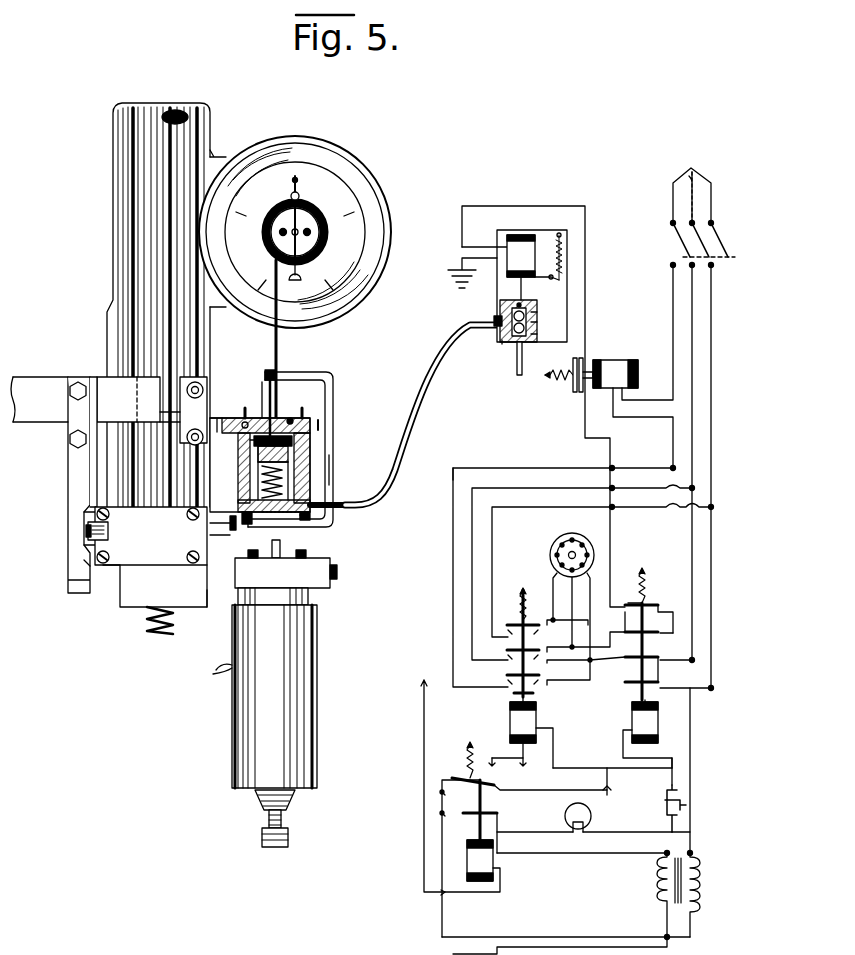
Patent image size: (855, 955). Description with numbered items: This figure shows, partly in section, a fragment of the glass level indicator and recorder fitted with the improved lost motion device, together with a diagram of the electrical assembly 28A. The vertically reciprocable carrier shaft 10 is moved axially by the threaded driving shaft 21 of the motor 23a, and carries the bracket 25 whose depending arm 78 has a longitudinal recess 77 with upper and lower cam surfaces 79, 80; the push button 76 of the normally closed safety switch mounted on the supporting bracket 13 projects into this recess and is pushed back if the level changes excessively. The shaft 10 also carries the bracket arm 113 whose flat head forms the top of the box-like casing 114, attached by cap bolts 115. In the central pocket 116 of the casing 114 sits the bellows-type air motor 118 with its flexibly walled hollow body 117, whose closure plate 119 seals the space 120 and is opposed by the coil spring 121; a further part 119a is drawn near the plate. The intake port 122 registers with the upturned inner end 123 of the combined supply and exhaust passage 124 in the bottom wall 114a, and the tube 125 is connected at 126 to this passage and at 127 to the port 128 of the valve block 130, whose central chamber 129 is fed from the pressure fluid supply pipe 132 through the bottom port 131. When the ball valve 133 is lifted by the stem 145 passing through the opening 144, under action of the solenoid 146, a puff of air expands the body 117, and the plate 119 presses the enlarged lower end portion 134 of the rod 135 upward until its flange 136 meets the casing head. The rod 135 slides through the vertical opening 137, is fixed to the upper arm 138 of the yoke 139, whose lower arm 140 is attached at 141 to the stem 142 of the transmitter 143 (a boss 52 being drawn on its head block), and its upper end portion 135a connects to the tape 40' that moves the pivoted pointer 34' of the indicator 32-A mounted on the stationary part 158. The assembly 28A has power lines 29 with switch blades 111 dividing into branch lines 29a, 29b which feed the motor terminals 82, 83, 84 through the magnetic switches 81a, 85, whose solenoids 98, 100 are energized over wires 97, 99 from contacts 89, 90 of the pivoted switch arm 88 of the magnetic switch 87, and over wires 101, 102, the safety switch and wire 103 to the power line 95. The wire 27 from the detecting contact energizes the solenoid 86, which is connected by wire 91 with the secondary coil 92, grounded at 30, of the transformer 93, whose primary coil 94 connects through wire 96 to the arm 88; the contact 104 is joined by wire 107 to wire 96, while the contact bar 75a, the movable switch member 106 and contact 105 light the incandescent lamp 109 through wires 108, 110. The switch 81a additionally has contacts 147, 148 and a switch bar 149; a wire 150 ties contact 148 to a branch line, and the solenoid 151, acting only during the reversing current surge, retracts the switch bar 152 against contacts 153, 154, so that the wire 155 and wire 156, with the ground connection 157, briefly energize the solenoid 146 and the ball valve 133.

The carrier shaft 10 is at (150, 122).
The stationary part of the framework 158 is at (214, 168).
The indicator 32-A is at (364, 151).
The pivoted pointer 34' is at (296, 227).
The tape 40' is at (258, 340).
The bracket 25 is at (41, 380).
The depending arm 78 is at (70, 464).
The upper cam surface 79 is at (80, 504).
The longitudinal recess 77 is at (86, 554).
The lower cam surface 80 is at (86, 567).
The push button control member 76 is at (108, 530).
The threaded driving shaft 21 is at (145, 620).
The supporting bracket 13 is at (193, 608).
The bracket arm 113 is at (218, 414).
The cap bolts 115 is at (318, 420).
The flange 136 is at (246, 418).
The vertical opening 137 is at (262, 380).
The upper end portion of the rod 135a is at (275, 378).
The lower arm of the yoke 140 is at (332, 527).
The upper arm of the yoke 138 is at (322, 375).
The rod 135 is at (287, 410).
The port 119a is at (292, 417).
The enlarged lower end portion of the rod 134 is at (300, 428).
The coil spring 121 is at (292, 443).
The space within the hollow body 120 is at (292, 460).
The yoke 139 is at (334, 472).
The closure plate 119 is at (242, 449).
The air motor 118 is at (256, 463).
The hollow body 117 is at (262, 478).
The central vertical pocket 116 is at (260, 490).
The box-like casing 114 is at (244, 505).
The intake port 122 is at (230, 521).
The upturned inner end of the passage 123 is at (230, 541).
The combined pressure fluid supply and exhaust passage 124 is at (257, 530).
The bottom wall of the casing 114a is at (282, 523).
The tube connection 126 is at (316, 523).
The attachment of yoke to stem 141 is at (279, 549).
The stem 142 is at (282, 577).
The boss 52 is at (336, 574).
The transmitter 143 is at (232, 707).
The combined pressure fluid supply and exhaust tube 125 is at (417, 392).
The assembly of electrical parts and connections 28A is at (452, 455).
The ground connection 157 is at (460, 260).
The solenoid 146 is at (531, 246).
The stem 145 is at (518, 288).
The opening 144 is at (517, 311).
The ball valve 133 is at (524, 301).
The valve block 130 is at (550, 302).
The central chamber 129 is at (550, 316).
The bottom port 131 is at (550, 331).
The tube connection 127 is at (494, 325).
The port 128 is at (500, 342).
The pressure fluid supply pipe 132 is at (523, 366).
The wire 156 is at (586, 263).
The contact 154 is at (582, 367).
The solenoid 151 is at (614, 366).
The switch bar 152 is at (574, 387).
The contact 153 is at (586, 396).
The power lines 29 is at (703, 418).
The switch blades 111 is at (715, 262).
The branch lines 29b is at (455, 590).
The wire 155 is at (608, 518).
The branch lines 29a is at (712, 523).
The motor 23a is at (556, 545).
The motor terminal 82 is at (552, 575).
The motor terminal 83 is at (568, 583).
The motor terminal 84 is at (590, 573).
The switch bar 149 is at (633, 604).
The wire 150 is at (660, 606).
The contact 147 is at (626, 613).
The contact 148 is at (661, 647).
The magnetic switch 85 is at (504, 700).
The magnetic switch 81a is at (623, 700).
The solenoid 100 is at (510, 723).
The solenoid 98 is at (658, 724).
The wire 95 is at (692, 718).
The wire 27 is at (425, 719).
The pivoted switch arm 88 is at (484, 777).
The switch contact 90 is at (493, 769).
The wire 99 is at (525, 764).
The wire 102 is at (561, 770).
The wire 101 is at (655, 760).
The contact bar 75a is at (452, 786).
The switch contact 89 is at (503, 787).
The contact 104 is at (460, 798).
The contact 105 is at (498, 814).
The incandescent lamp 109 is at (566, 816).
The wire 97 is at (608, 796).
The wire 103 is at (673, 824).
The wire 107 is at (446, 822).
The magnetic switch 87 is at (470, 841).
The movable switch member 106 is at (490, 834).
The wire 108 is at (535, 835).
The wire 110 is at (605, 835).
The solenoid 86 is at (469, 864).
The wire 91 is at (566, 856).
The transformer 93 is at (644, 874).
The primary coil 94 is at (701, 882).
The secondary coil 92 is at (660, 890).
The wire 96 is at (542, 936).
The ground connection 30 is at (490, 950).